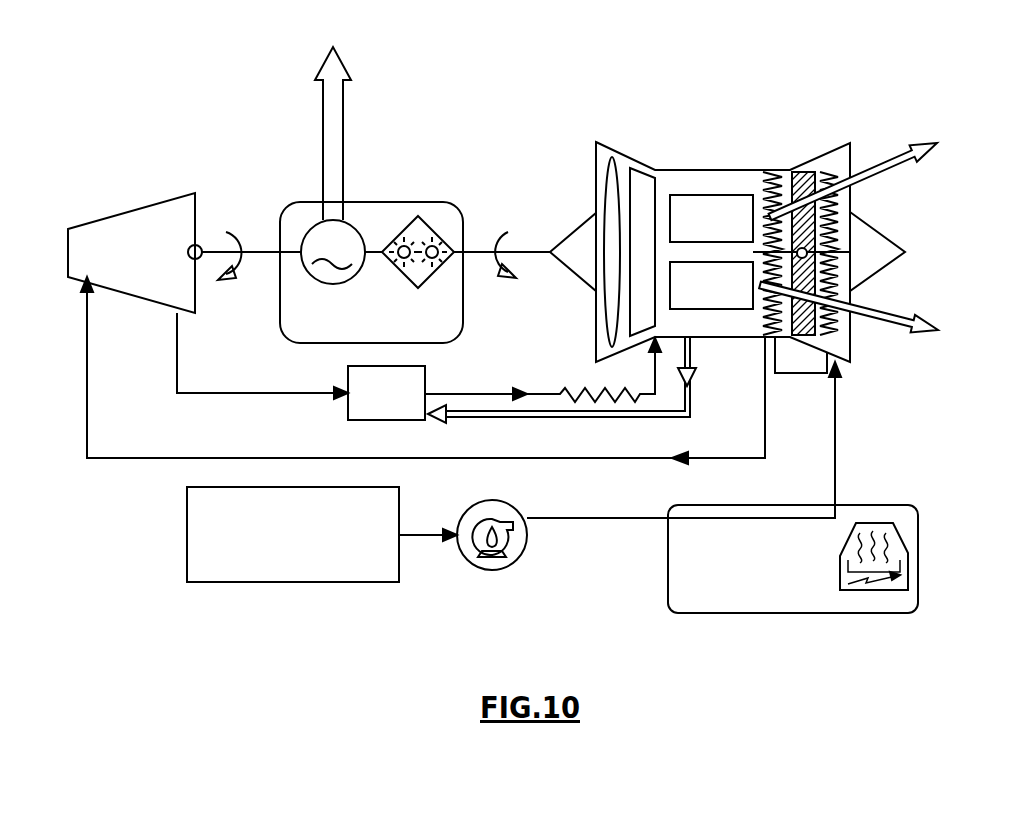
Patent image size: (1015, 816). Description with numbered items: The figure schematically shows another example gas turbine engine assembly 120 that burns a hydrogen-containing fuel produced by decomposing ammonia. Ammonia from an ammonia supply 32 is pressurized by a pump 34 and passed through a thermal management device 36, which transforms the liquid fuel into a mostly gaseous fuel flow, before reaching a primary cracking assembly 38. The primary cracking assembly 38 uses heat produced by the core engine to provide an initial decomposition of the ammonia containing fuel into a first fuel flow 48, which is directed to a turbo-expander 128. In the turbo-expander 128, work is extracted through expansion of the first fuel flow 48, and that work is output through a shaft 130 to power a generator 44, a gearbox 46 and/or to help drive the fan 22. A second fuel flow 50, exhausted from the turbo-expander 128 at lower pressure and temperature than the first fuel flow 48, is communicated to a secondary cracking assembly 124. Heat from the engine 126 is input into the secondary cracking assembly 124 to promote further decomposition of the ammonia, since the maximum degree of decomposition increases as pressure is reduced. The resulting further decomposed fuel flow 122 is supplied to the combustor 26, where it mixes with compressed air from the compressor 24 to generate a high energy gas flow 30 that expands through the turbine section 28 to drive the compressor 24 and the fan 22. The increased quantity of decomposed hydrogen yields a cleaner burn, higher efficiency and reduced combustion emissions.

The gas turbine engine assembly 120 is at (896, 69).
The turbo-expander 128 is at (130, 222).
The shaft 130 is at (215, 250).
The generator 44 is at (365, 222).
The gearbox 46 is at (425, 233).
The fan 22 is at (618, 160).
The compressor 24 is at (645, 182).
The combustor 26 is at (694, 215).
The turbine section 28 is at (802, 178).
The high energy gas flow 30 is at (898, 165).
The primary cracking assembly 38 is at (758, 349).
The second fuel flow 50 is at (177, 340).
The secondary cracking assembly 124 is at (386, 393).
The further decomposed fuel flow 122 is at (470, 385).
The heat from the engine 126 is at (455, 418).
The first fuel flow 48 is at (568, 462).
The ammonia tank 32 is at (313, 570).
The pump 34 is at (470, 560).
The thermal management device 36 is at (668, 560).